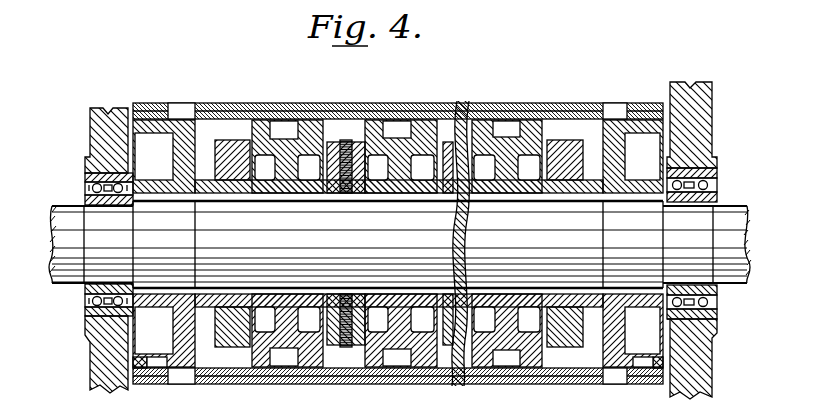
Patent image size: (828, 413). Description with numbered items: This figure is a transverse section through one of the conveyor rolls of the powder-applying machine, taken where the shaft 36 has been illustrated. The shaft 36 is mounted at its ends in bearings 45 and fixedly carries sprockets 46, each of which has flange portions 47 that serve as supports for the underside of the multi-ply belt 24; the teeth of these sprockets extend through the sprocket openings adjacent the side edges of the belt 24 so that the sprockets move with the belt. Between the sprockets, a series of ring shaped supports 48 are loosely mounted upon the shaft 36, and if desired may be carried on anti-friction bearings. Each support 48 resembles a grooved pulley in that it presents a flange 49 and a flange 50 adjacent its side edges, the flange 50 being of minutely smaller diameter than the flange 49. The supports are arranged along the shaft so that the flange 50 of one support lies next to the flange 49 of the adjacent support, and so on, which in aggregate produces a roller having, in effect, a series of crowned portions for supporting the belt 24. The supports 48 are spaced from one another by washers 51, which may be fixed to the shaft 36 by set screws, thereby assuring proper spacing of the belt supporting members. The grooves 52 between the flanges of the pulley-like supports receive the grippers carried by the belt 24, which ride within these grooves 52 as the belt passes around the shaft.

The multi-ply belt 24 is at (504, 110).
The shaft 36 is at (729, 234).
The bearings 45 is at (83, 182).
The sprockets 46 is at (117, 317).
The flange portions 47 is at (133, 363).
The ring shaped supports 48 is at (454, 136).
The flange portion 49 is at (260, 120).
The flange portion 50 is at (314, 122).
The washers 51 is at (334, 142).
The grooves 52 is at (288, 108).